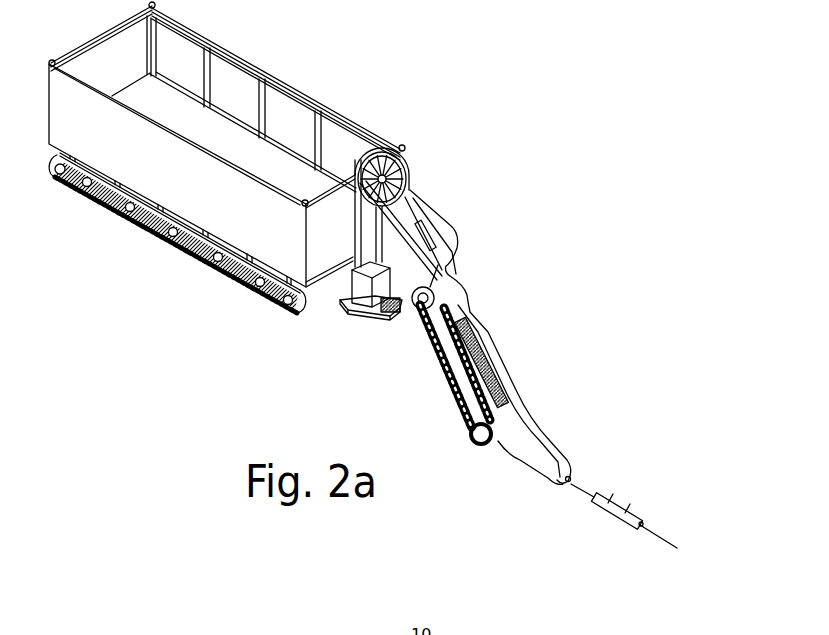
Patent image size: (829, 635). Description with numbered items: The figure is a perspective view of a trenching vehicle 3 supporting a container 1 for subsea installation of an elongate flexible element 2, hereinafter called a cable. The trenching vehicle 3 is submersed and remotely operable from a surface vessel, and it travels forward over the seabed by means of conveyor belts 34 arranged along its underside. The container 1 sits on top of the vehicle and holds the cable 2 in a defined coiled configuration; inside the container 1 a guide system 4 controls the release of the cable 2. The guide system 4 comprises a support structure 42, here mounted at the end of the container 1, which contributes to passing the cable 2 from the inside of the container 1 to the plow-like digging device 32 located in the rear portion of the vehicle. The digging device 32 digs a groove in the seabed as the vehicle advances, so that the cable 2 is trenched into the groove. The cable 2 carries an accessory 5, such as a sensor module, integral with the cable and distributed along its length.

The container 1 is at (277, 70).
The elongate flexible element 2 is at (662, 535).
The trenching vehicle 3 is at (464, 221).
The guide system 4 is at (238, 80).
The accessory 5 is at (618, 500).
The plow-like digging device 32 is at (537, 443).
The conveyor belts 34 is at (158, 240).
The support structure 42 is at (407, 168).